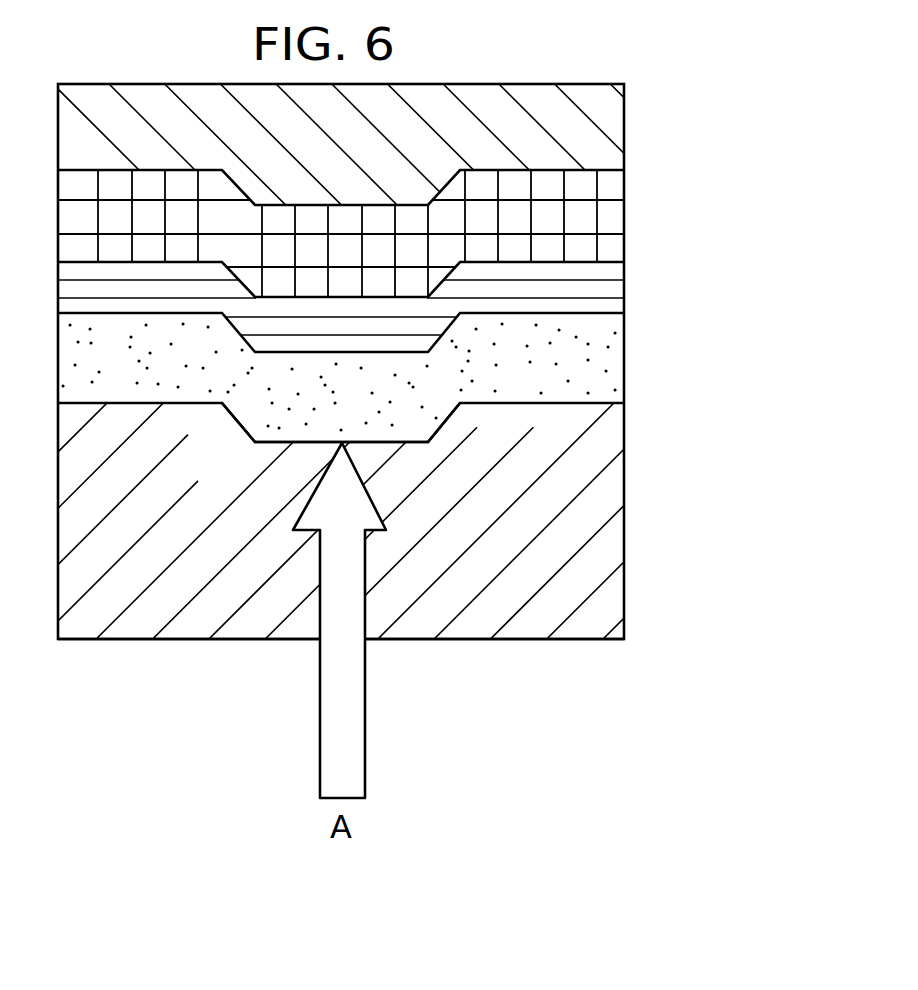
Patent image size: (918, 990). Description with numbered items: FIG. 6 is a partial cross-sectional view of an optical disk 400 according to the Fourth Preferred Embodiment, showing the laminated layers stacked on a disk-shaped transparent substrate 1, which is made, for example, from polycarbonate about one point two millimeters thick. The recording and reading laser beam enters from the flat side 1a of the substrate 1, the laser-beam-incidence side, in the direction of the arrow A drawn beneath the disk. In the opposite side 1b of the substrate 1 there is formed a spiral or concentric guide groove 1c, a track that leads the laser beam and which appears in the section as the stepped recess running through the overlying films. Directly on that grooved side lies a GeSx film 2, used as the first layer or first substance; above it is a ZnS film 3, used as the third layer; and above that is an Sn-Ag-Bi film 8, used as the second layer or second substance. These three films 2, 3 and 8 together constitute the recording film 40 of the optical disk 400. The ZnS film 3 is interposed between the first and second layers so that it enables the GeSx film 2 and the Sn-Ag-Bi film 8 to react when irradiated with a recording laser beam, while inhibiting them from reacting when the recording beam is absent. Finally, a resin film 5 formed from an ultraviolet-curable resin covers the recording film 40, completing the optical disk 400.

The optical disk 400 is at (645, 174).
The resin film 5 is at (592, 131).
The Sn-Ag-Bi film 8 is at (583, 226).
The ZnS film 3 is at (590, 298).
The GeSx film 2 is at (381, 377).
The recording film 40 is at (421, 300).
The transparent substrate 1 is at (389, 538).
The side of the substrate 1a is at (497, 641).
The opposite side 1b is at (565, 410).
The guide groove 1c is at (222, 440).